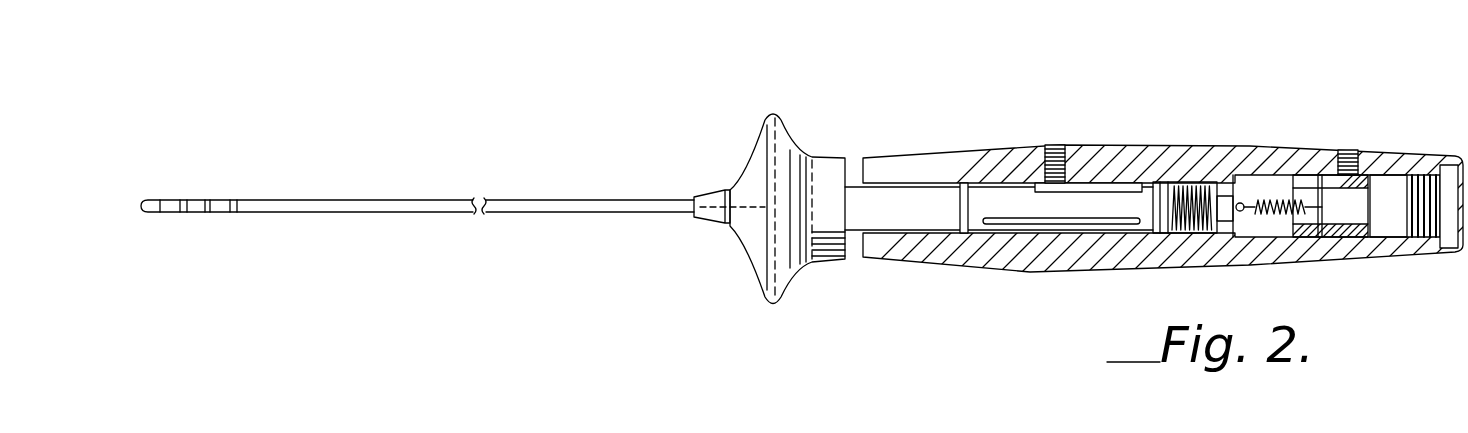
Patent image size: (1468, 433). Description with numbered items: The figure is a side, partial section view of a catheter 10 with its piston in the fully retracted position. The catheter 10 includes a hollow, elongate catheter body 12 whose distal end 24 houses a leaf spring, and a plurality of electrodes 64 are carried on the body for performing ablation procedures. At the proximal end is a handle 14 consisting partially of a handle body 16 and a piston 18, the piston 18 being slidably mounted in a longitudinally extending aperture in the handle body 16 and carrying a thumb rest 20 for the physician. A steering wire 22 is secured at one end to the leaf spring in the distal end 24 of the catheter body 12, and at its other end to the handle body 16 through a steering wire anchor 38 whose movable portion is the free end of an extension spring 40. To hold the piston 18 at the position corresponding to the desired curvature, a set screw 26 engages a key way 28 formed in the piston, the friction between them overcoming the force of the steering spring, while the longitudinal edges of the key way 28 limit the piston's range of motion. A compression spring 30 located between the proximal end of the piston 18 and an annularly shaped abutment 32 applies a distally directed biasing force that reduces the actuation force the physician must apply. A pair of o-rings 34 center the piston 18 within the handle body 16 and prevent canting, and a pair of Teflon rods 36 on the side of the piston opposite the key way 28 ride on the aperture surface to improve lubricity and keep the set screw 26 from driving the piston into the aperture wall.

The catheter 10 is at (858, 68).
The catheter body 12 is at (417, 177).
The handle 14 is at (956, 118).
The handle body 16 is at (1415, 158).
The piston 18 is at (890, 195).
The thumb rest 20 is at (762, 131).
The steering wire 22 is at (1238, 183).
The distal end 24 is at (171, 200).
The set screw 26 is at (1058, 147).
The key way 28 is at (1105, 185).
The compression spring 30 is at (1200, 233).
The abutment 32 is at (1238, 232).
The o-rings 34 is at (962, 236).
The Teflon rods 36 is at (1022, 224).
The steering wire anchor 38 is at (1380, 225).
The extension spring 40 is at (1284, 200).
The electrodes 64 is at (237, 200).